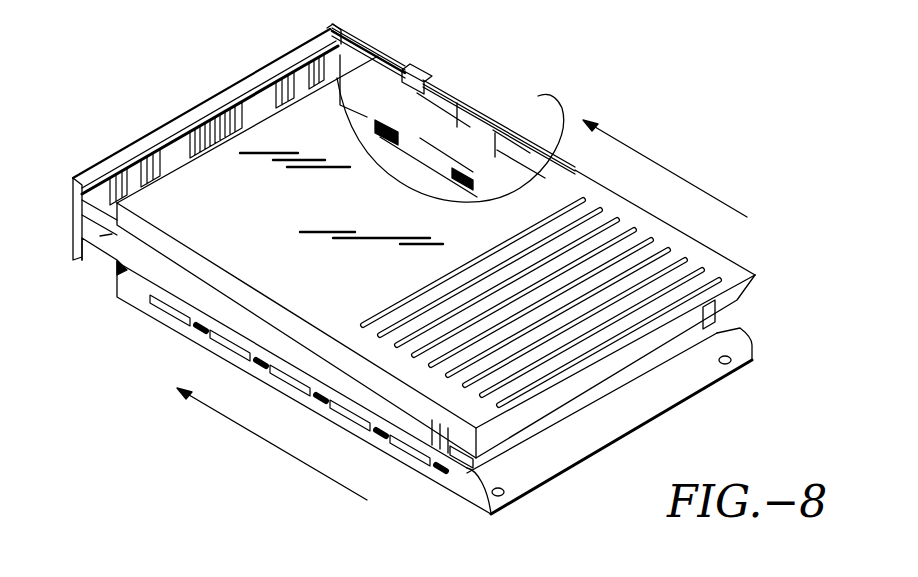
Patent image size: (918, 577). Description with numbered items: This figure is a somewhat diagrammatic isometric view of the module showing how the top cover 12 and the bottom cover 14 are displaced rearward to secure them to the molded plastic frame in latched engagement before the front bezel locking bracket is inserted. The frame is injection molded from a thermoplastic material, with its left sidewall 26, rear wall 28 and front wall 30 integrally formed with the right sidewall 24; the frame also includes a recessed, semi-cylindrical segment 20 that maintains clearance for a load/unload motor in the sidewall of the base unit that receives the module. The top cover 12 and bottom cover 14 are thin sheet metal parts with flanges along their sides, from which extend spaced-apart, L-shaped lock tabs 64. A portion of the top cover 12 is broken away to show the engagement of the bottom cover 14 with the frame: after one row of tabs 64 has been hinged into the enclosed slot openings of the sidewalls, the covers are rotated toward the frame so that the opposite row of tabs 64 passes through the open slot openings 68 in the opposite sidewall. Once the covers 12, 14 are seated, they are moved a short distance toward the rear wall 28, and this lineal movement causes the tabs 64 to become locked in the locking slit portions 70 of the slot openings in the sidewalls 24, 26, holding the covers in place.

The top cover 12 is at (645, 212).
The bottom cover 14 is at (432, 460).
The recessed, semi-cylindrical segment 20 is at (390, 68).
The right sidewall 24 is at (510, 134).
The left sidewall 26 is at (105, 238).
The rear wall 28 is at (190, 110).
The front wall 30 is at (735, 322).
The lock tabs 64 is at (430, 85).
The open slot openings 68 is at (372, 124).
The locking slit portions 70 is at (363, 53).